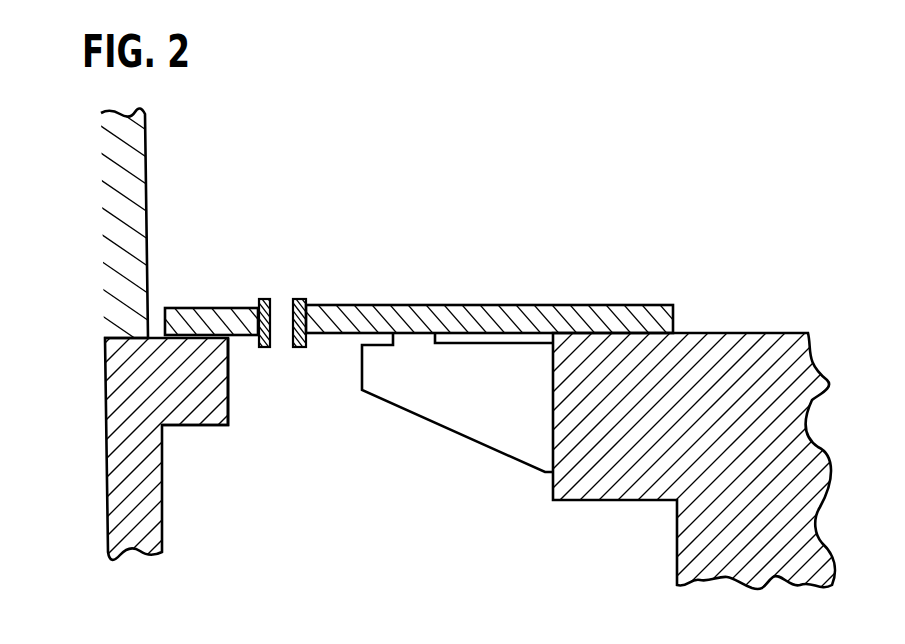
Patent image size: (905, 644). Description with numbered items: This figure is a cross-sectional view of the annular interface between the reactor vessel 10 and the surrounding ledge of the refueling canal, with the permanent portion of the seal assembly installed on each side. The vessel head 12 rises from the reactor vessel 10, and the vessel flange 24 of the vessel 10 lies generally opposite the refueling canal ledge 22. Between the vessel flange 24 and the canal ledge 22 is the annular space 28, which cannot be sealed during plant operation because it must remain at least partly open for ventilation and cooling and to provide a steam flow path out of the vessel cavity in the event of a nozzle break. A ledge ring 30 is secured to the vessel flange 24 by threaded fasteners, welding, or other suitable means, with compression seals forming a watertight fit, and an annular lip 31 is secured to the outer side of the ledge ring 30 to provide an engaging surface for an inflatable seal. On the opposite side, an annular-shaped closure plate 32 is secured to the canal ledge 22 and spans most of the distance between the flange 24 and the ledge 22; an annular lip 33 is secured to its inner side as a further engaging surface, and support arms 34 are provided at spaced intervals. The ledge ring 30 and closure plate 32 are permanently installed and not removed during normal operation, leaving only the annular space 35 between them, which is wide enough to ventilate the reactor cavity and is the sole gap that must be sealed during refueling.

The reactor vessel 10 is at (108, 536).
The vessel head 12 is at (130, 163).
The refueling canal ledge 22 is at (600, 500).
The vessel flange 24 is at (195, 428).
The annular space 28 is at (372, 452).
The ledge ring 30 is at (202, 303).
The annular lip 31 is at (263, 298).
The closure plate 32 is at (487, 305).
The annular lip 33 is at (298, 298).
The support arms 34 is at (467, 437).
The annular space 35 is at (282, 335).